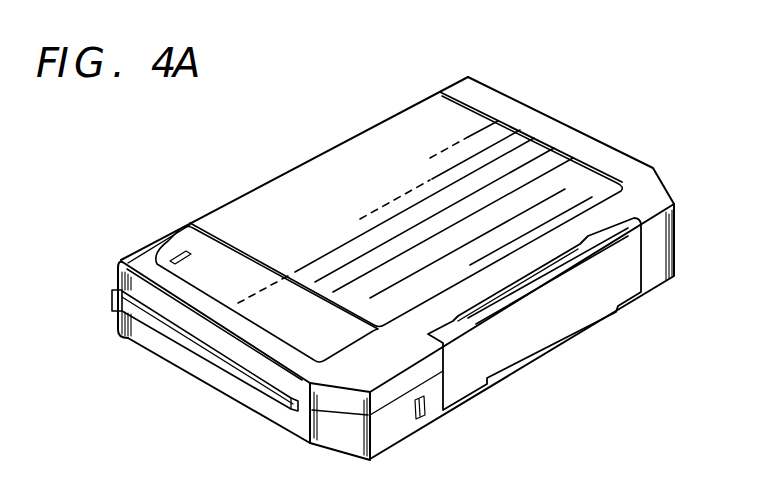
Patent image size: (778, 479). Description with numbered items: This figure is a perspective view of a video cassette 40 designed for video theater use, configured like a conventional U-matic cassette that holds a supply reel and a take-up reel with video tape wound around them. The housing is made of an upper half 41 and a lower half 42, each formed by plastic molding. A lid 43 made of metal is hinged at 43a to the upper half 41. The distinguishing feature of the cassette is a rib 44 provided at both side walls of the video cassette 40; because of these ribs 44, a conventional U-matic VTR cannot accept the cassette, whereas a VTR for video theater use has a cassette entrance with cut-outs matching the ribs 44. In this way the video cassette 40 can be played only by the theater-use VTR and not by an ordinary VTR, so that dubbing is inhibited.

The video cassette 40 is at (295, 163).
The upper half 41 is at (581, 150).
The lower half 42 is at (237, 386).
The lid 43 is at (568, 312).
The hinge 43a is at (497, 288).
The rib 44 is at (160, 328).